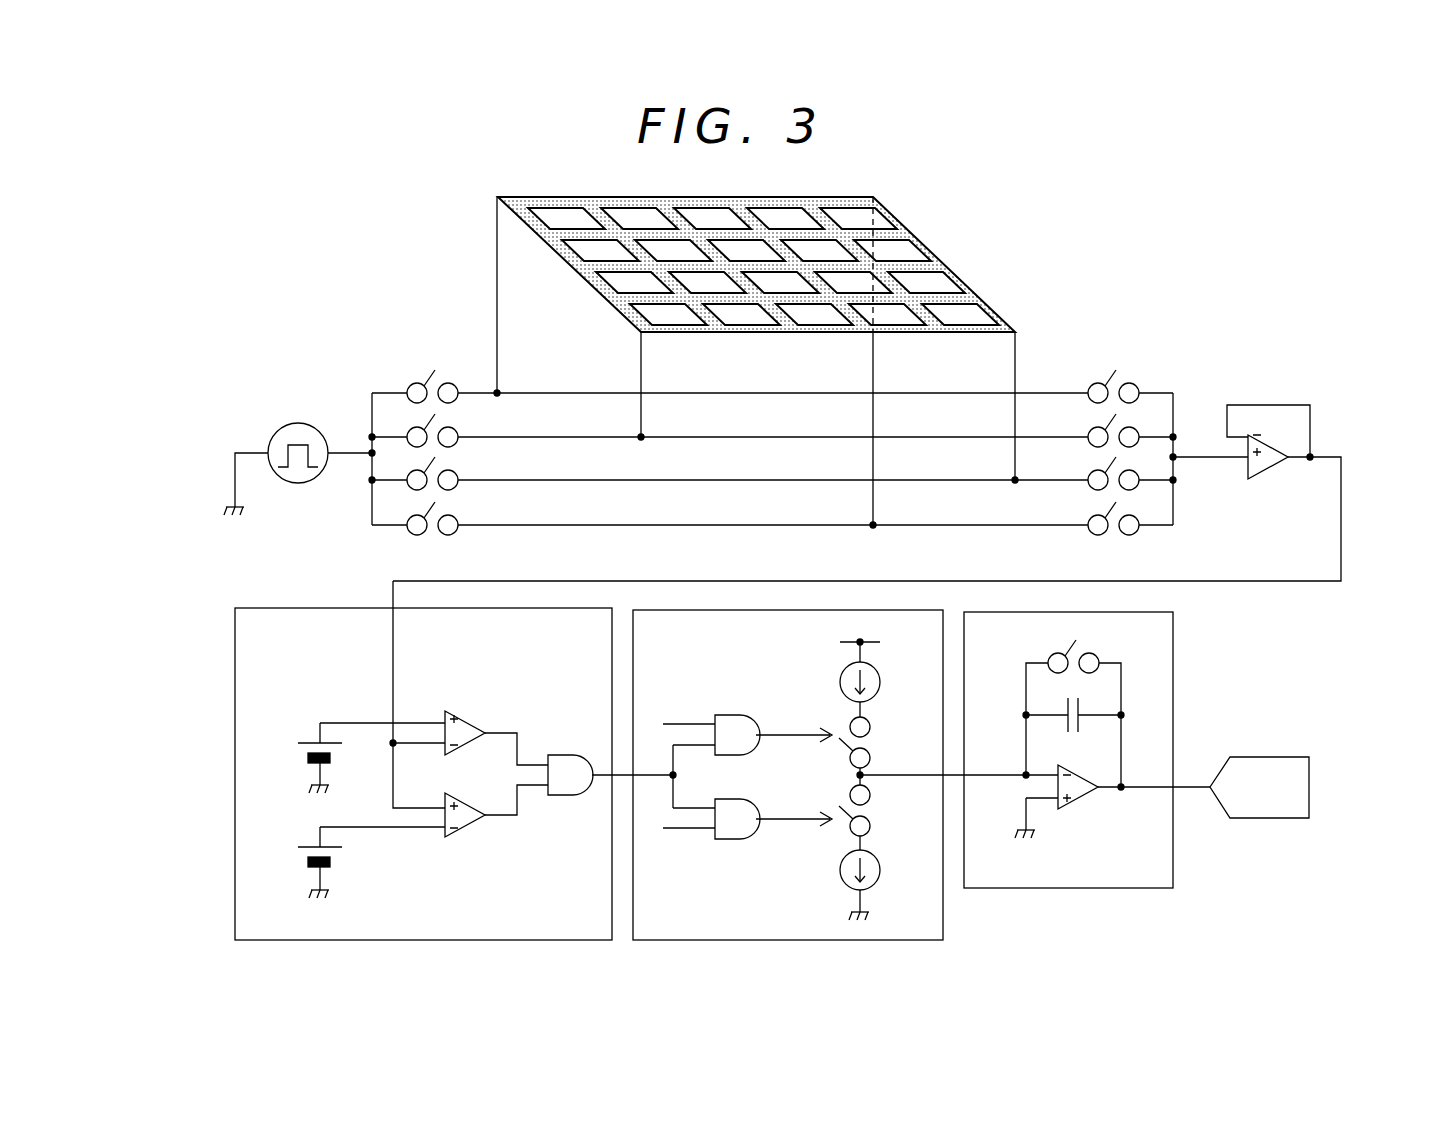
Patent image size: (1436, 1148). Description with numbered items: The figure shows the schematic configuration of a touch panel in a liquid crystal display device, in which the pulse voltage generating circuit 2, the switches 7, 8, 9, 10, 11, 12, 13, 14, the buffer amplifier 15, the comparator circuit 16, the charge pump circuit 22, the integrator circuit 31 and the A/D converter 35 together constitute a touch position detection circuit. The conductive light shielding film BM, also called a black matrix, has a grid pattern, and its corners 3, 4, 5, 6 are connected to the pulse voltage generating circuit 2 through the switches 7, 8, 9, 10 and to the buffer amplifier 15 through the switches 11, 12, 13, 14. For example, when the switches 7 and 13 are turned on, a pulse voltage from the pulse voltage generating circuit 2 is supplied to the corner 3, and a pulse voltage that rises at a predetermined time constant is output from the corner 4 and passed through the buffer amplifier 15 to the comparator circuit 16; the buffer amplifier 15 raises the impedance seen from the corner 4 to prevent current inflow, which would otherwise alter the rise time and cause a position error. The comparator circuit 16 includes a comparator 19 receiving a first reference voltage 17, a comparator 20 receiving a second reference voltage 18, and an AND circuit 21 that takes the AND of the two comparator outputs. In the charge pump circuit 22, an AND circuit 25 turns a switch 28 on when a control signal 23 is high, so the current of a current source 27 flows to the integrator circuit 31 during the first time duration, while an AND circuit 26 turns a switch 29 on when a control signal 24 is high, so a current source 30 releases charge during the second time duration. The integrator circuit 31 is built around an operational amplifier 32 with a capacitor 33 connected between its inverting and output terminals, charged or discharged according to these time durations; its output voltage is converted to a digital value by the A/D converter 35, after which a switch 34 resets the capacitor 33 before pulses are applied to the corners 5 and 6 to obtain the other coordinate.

The conductive light shielding film BM is at (600, 195).
The pulse voltage generating circuit 2 is at (270, 428).
The corner 3 is at (483, 288).
The corner 4 is at (1030, 404).
The corner 5 is at (882, 346).
The corner 6 is at (628, 382).
The switch 7 is at (747, 399).
The switch 8 is at (747, 443).
The switch 9 is at (747, 486).
The switch 10 is at (747, 532).
The switch 11 is at (1116, 400).
The switch 12 is at (1116, 444).
The switch 13 is at (1116, 488).
The switch 14 is at (1116, 533).
The buffer amplifier 15 is at (1268, 461).
The comparator circuit 16 is at (423, 760).
The reference voltage 17 is at (353, 848).
The reference voltage 18 is at (353, 743).
The comparator 19 is at (470, 832).
The comparator 20 is at (467, 705).
The AND circuit 21 is at (610, 760).
The charge pump circuit 22 is at (788, 775).
The control signal 23 is at (689, 708).
The control signal 24 is at (685, 850).
The AND circuit 25 is at (752, 718).
The AND circuit 26 is at (752, 839).
The current source 27 is at (884, 678).
The switch 28 is at (948, 747).
The switch 29 is at (877, 812).
The current source 30 is at (884, 885).
The integrator circuit 31 is at (1068, 750).
The operational amplifier 32 is at (1112, 805).
The capacitor 33 is at (1073, 742).
The switch 34 is at (1086, 673).
The A/D converter 35 is at (1259, 769).